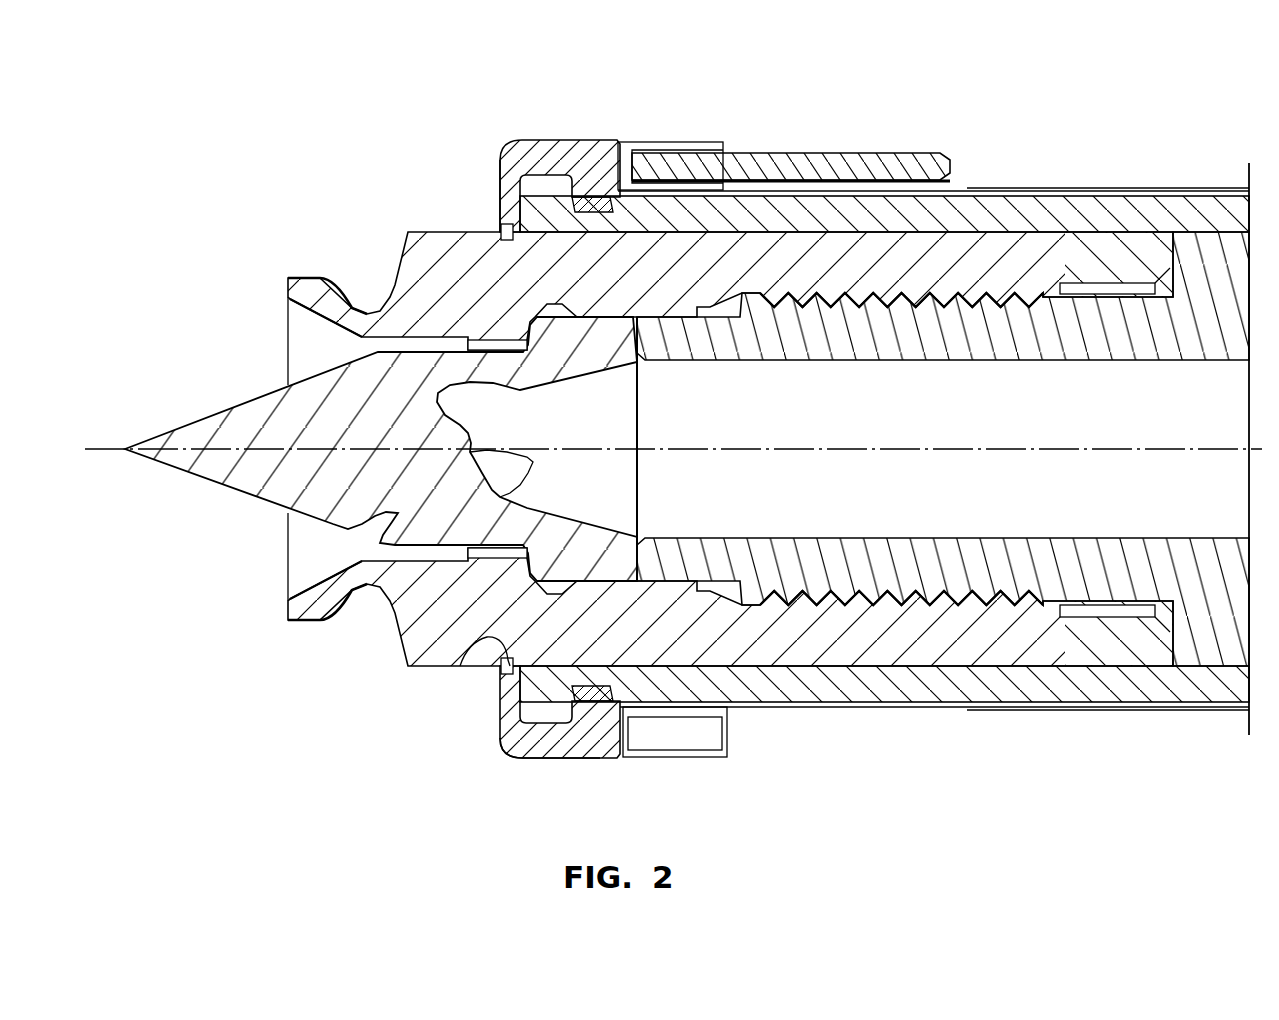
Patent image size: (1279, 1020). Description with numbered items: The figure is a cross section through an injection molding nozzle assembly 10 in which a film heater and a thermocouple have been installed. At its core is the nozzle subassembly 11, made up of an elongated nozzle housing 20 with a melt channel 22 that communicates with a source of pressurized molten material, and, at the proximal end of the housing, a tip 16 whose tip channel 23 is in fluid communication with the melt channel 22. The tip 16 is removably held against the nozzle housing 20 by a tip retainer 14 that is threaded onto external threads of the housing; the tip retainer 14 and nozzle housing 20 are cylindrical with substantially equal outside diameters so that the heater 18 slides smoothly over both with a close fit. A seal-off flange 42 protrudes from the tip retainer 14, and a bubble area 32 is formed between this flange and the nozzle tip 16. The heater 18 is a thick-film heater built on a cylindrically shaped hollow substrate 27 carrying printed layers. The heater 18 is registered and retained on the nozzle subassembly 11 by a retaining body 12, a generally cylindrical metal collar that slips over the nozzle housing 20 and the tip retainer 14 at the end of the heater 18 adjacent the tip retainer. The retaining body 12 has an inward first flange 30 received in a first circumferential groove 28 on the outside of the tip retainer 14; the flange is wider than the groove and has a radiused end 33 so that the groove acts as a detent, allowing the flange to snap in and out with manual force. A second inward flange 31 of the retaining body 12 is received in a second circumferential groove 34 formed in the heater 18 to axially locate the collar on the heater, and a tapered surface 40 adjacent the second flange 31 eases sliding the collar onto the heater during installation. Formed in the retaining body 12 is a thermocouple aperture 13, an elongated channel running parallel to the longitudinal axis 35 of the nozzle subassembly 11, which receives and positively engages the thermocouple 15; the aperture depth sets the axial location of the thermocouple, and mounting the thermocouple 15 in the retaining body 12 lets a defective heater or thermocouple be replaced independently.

The injection nozzle assembly 10 is at (1034, 136).
The nozzle subassembly 11 is at (400, 692).
The retaining body 12 is at (560, 140).
The thermocouple aperture 13 is at (690, 145).
The tip retainer 14 is at (417, 232).
The thermocouple 15 is at (820, 153).
The tip 16 is at (193, 417).
The heater 18 is at (840, 710).
The nozzle housing 20 is at (1200, 668).
The melt channel 22 is at (818, 430).
The tip channel 23 is at (562, 430).
The hollow substrate 27 is at (1187, 198).
The first circumferential groove 28 is at (500, 230).
The first flange 30 is at (500, 197).
The second flange 31 is at (570, 732).
The bubble area 32 is at (300, 555).
The radiused end 33 is at (497, 640).
The second circumferential groove 34 is at (593, 197).
The longitudinal axis 35 is at (913, 452).
The tapered surface 40 is at (588, 702).
The seal-off flange 42 is at (290, 623).